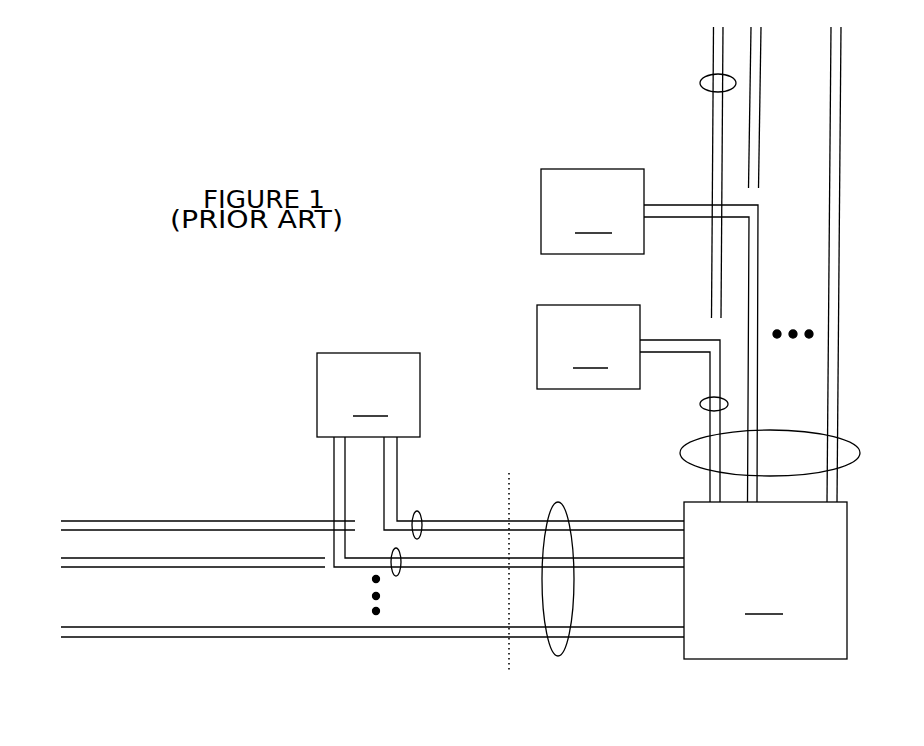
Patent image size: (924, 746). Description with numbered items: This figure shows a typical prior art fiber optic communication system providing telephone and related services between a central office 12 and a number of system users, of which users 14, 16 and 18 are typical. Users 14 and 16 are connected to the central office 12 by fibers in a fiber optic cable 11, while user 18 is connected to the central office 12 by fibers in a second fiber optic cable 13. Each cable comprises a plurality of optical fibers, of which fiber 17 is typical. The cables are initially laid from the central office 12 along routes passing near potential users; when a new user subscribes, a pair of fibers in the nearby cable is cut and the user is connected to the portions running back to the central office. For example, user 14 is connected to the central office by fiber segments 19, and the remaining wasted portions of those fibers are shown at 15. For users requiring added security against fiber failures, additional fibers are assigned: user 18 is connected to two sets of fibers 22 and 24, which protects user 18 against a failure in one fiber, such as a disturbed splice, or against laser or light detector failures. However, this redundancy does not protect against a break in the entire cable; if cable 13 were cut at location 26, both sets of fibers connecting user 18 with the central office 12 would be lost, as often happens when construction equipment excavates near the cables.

The fiber optic cable 11 is at (860, 453).
The central office 12 is at (765, 580).
The second fiber optic cable 13 is at (562, 502).
The user 14 is at (588, 347).
The wasted fiber segments 15 is at (700, 83).
The user 16 is at (592, 211).
The fiber 17 is at (838, 273).
The user 18 is at (368, 395).
The fiber segments 19 is at (701, 404).
The set of fibers 22 is at (420, 513).
The set of fibers 24 is at (397, 576).
The location 26 is at (510, 450).